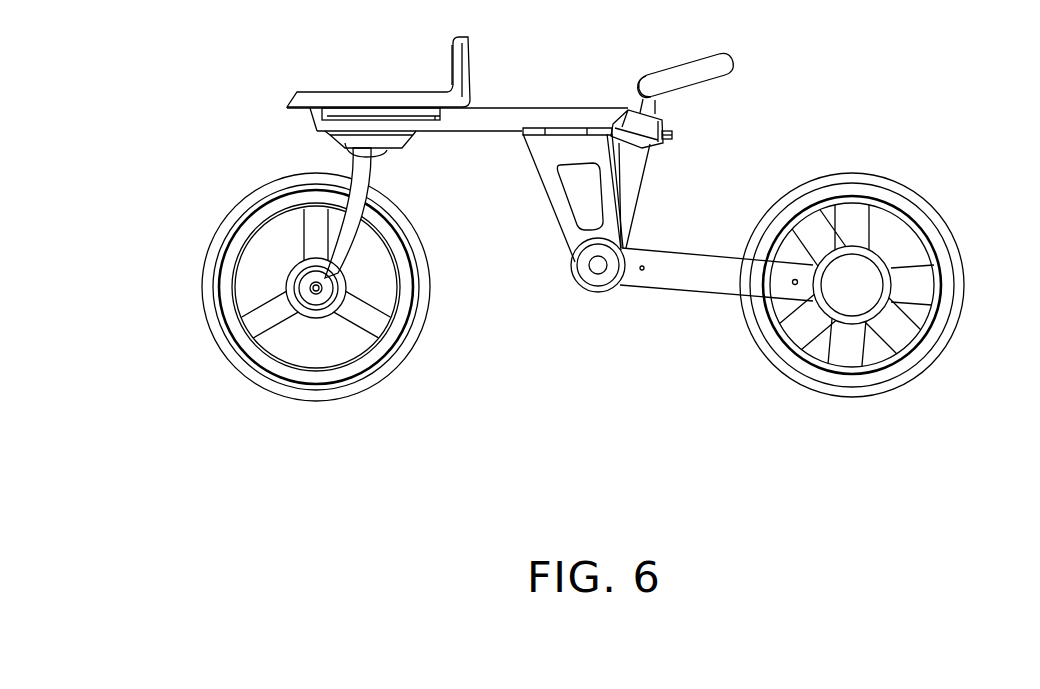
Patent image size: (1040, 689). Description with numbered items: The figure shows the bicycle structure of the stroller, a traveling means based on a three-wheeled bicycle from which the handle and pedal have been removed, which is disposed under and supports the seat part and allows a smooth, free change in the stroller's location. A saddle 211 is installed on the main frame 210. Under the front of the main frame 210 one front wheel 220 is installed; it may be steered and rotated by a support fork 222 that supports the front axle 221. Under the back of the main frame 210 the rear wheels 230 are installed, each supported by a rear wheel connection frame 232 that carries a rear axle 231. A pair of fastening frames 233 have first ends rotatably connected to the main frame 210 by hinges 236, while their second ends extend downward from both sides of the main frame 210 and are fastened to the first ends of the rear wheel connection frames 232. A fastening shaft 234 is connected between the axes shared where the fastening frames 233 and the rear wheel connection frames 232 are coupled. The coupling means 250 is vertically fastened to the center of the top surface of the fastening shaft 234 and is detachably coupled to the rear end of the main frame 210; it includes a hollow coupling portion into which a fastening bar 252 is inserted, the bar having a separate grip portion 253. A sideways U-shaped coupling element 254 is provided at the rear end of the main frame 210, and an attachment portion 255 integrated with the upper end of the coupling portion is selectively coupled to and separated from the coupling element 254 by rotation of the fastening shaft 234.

The main frame 210 is at (536, 107).
The saddle 211 is at (390, 100).
The front wheel 220 is at (316, 403).
The front axle 221 is at (312, 288).
The support fork 222 is at (355, 232).
The rear wheel 230 is at (852, 397).
The rear axle 231 is at (862, 283).
The rear wheel connection frame 232 is at (708, 283).
The fastening frame 233 is at (568, 225).
The fastening shaft 234 is at (597, 274).
The hinge 236 is at (562, 135).
The coupling means 250 is at (626, 177).
The fastening bar 252 is at (660, 106).
The grip portion 253 is at (722, 65).
The coupling element 254 is at (664, 128).
The attachment portion 255 is at (672, 137).